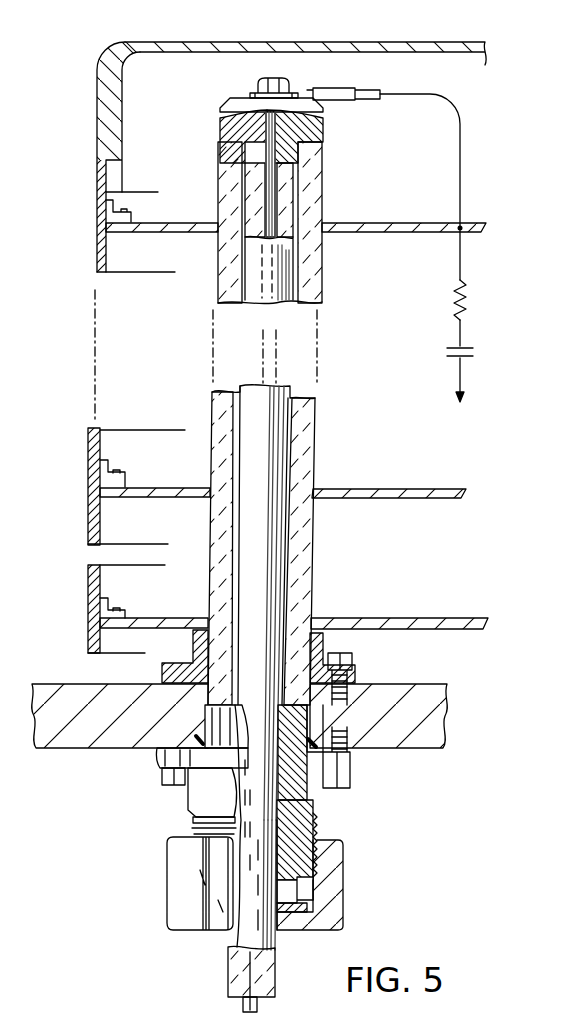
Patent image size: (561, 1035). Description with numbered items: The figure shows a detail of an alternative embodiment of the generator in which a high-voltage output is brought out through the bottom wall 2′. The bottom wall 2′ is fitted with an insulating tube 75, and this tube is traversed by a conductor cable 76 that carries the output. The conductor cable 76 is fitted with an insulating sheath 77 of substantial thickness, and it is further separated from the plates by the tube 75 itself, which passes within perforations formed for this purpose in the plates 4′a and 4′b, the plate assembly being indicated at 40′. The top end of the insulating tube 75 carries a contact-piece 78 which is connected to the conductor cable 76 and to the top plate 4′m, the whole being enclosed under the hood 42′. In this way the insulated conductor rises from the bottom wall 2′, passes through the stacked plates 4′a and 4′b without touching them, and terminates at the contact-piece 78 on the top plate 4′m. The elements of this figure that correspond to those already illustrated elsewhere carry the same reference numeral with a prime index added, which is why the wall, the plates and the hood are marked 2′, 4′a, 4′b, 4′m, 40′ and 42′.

The hood 42′ is at (140, 45).
The contact-piece 78 is at (220, 128).
The conductor cable 76 is at (275, 136).
The insulating sheath 77 is at (290, 182).
The insulating tube 75 is at (322, 206).
The measuring electrode plate 4′m is at (476, 232).
The electrode plate support 40′ is at (90, 470).
The electrode plate 4′b is at (440, 493).
The electrode plate 4′a is at (437, 628).
The bottom wall 2′ is at (430, 700).